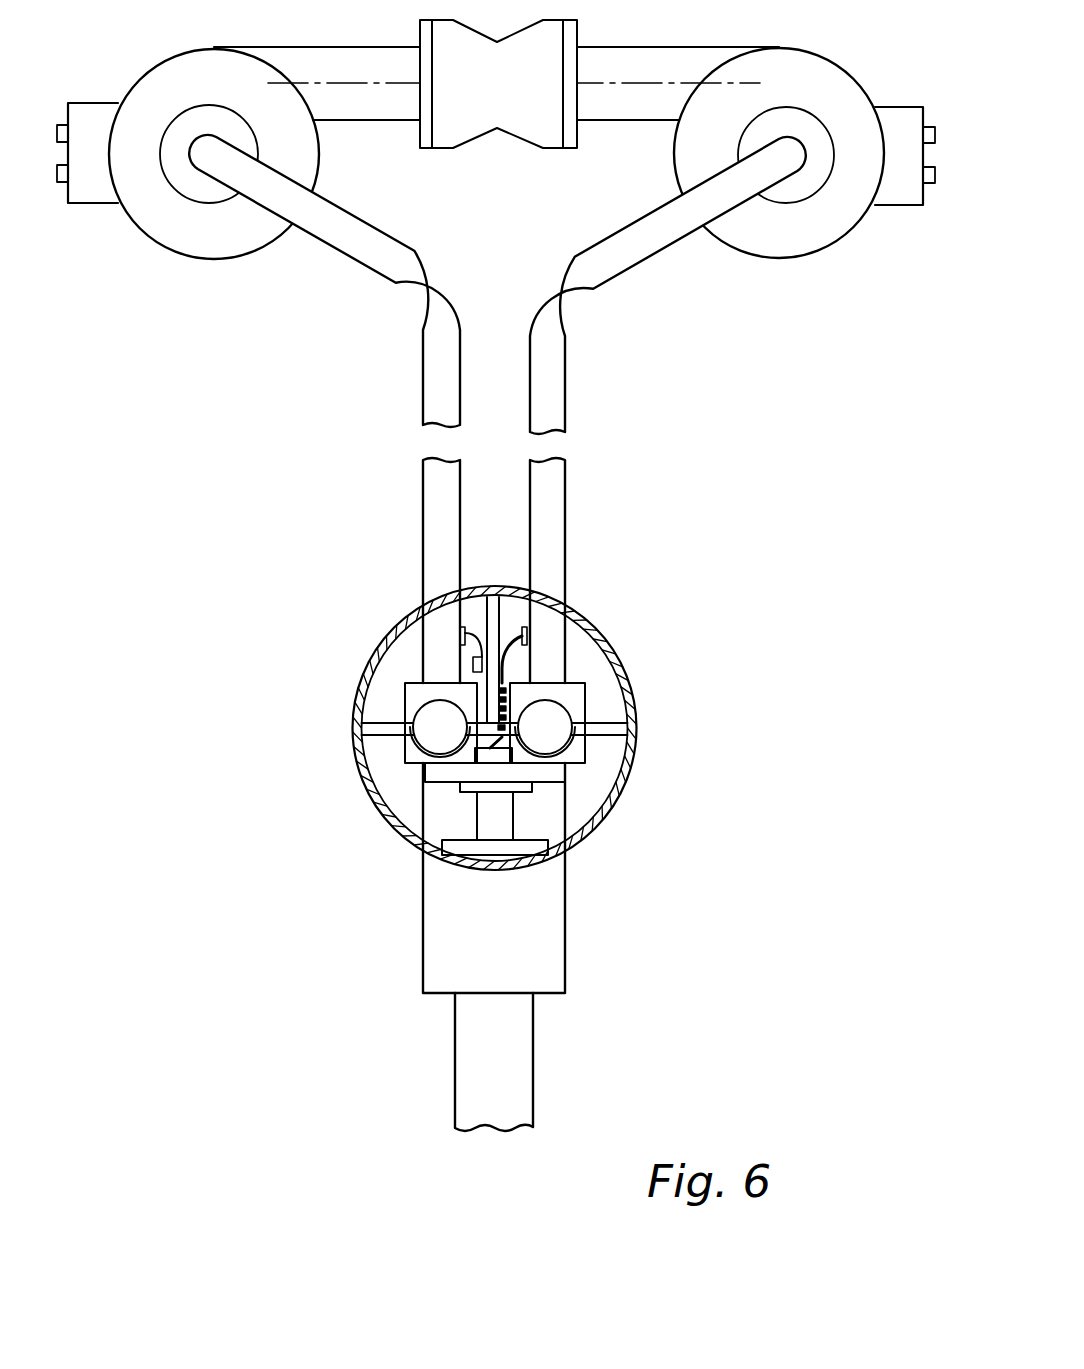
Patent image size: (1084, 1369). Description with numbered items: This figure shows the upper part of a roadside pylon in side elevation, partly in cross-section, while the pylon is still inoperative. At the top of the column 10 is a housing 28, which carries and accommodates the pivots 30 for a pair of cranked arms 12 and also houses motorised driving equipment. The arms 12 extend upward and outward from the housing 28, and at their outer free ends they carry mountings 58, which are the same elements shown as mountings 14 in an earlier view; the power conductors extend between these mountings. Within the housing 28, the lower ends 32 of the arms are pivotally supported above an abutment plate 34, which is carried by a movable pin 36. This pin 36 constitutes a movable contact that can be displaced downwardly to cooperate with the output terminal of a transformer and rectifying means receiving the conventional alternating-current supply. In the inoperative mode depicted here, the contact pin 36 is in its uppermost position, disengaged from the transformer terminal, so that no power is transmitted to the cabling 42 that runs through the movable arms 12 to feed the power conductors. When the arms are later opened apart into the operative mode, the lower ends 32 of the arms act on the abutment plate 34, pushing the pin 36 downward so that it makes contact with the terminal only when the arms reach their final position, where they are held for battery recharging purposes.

The column 10 is at (533, 1067).
The cranked arms 12 is at (565, 403).
The mountings 14 is at (805, 263).
The housing 28 is at (628, 683).
The pivots 30 is at (562, 698).
The lower ends of the arms 32 is at (407, 698).
The abutment plate 34 is at (423, 777).
The movable pin 36 is at (477, 813).
The cabling 42 is at (508, 623).
The mountings 58 is at (673, 43).